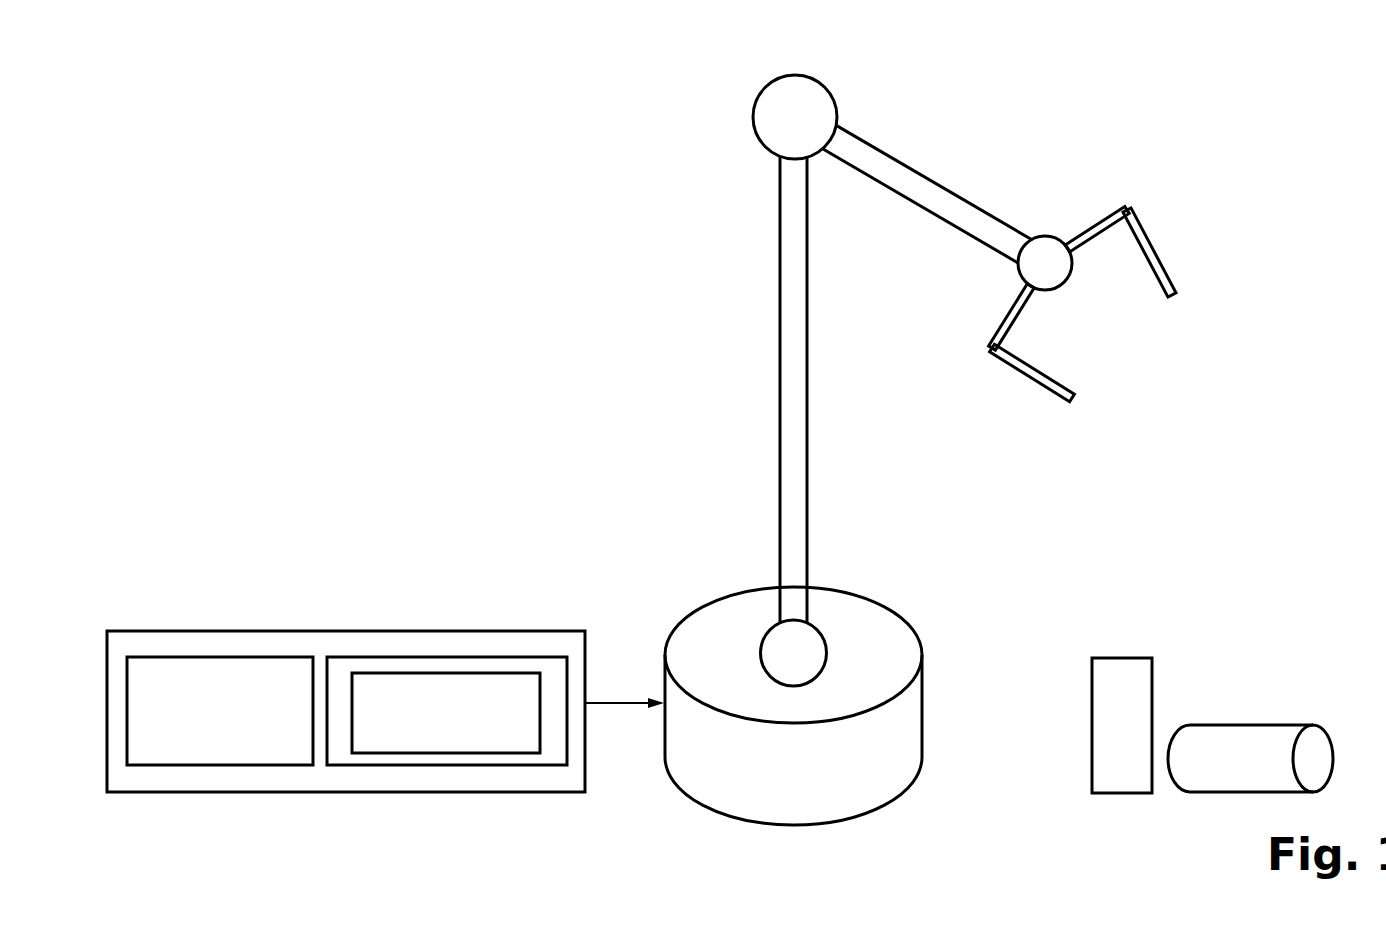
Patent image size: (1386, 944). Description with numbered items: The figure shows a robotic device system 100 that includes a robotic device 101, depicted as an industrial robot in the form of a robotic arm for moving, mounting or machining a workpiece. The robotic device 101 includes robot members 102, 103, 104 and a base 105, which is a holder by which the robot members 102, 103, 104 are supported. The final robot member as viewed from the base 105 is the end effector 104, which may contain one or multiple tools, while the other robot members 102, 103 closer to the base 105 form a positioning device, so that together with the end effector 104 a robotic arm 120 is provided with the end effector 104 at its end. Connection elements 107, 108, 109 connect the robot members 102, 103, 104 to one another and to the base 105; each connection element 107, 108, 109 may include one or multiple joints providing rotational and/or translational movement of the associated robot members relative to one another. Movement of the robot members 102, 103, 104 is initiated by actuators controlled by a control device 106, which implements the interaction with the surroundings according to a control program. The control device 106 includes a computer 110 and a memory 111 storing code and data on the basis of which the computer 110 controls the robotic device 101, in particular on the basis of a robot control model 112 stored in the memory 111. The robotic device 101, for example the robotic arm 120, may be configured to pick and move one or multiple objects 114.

The robotic device system 100 is at (204, 120).
The robotic device 101 is at (650, 170).
The robotic arm 120 is at (732, 258).
The robot member 102 is at (792, 345).
The robot member 103 is at (968, 212).
The end effector 104 is at (1150, 250).
The base 105 is at (903, 725).
The control device 106 is at (343, 631).
The connection element 107 is at (808, 642).
The connection element 108 is at (768, 117).
The connection element 109 is at (1060, 272).
The computer 110 is at (197, 727).
The memory 111 is at (447, 765).
The robot control model 112 is at (470, 729).
The object 114 is at (1220, 678).